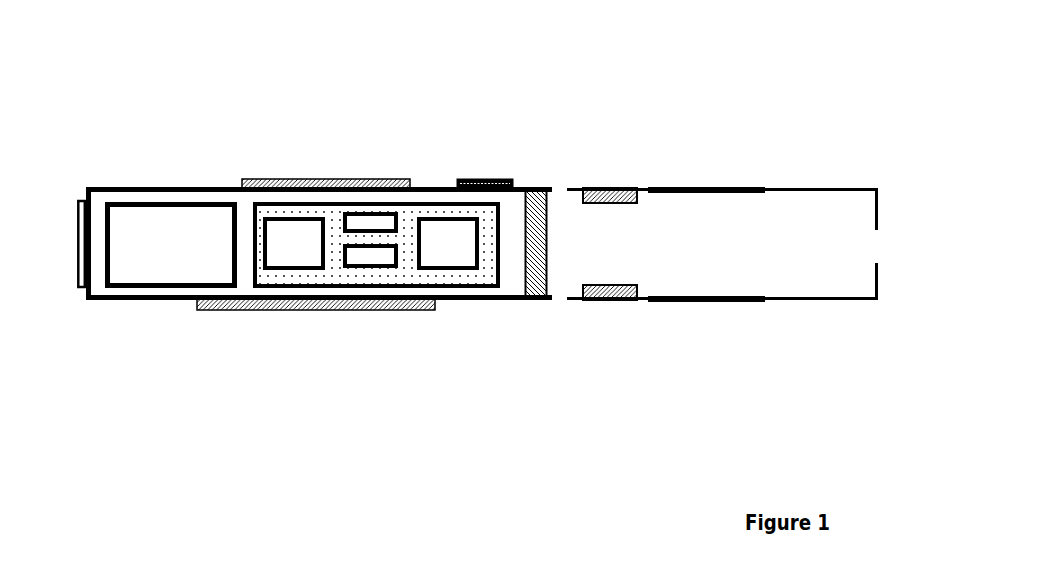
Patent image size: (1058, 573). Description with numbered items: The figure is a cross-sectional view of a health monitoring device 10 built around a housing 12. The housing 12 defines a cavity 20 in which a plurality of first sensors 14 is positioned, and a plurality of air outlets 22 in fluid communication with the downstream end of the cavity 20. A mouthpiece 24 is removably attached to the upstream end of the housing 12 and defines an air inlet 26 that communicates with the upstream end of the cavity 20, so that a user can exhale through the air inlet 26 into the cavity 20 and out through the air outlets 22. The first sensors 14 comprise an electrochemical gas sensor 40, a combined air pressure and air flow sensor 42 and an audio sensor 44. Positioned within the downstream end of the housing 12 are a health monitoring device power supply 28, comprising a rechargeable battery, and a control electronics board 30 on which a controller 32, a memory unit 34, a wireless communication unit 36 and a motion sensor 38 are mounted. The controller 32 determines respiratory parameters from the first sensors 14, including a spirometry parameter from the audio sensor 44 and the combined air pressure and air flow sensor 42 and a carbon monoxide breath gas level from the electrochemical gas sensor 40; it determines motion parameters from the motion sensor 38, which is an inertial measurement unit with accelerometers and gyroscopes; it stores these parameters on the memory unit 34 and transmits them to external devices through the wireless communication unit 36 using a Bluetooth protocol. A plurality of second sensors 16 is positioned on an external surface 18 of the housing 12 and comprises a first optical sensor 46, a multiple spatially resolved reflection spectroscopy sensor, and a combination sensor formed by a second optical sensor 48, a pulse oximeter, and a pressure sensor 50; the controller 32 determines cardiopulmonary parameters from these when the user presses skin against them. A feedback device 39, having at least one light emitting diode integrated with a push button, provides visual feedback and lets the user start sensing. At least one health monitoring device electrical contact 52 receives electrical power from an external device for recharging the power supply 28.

The health monitoring device 10 is at (784, 118).
The housing 12 is at (160, 300).
The plurality of first sensors 14 is at (556, 228).
The plurality of second sensors 16 is at (240, 326).
The external surface 18 is at (435, 187).
The cavity 20 is at (598, 249).
The air outlets 22 is at (558, 185).
The mouthpiece 24 is at (810, 300).
The air inlet 26 is at (877, 243).
The health monitoring device power supply 28 is at (157, 215).
The control electronics board 30 is at (410, 275).
The controller 32 is at (446, 250).
The memory unit 34 is at (368, 222).
The wireless communication unit 36 is at (367, 258).
The motion sensor 38 is at (284, 240).
The feedback device 39 is at (473, 182).
The electrochemical gas sensor 40 is at (532, 266).
The combined air pressure and air flow sensor 42 is at (612, 189).
The audio sensor 44 is at (612, 300).
The first optical sensor 46 is at (283, 308).
The second optical sensor 48 is at (328, 184).
The pressure sensor 50 is at (350, 181).
The health monitoring device electrical contact 52 is at (79, 241).